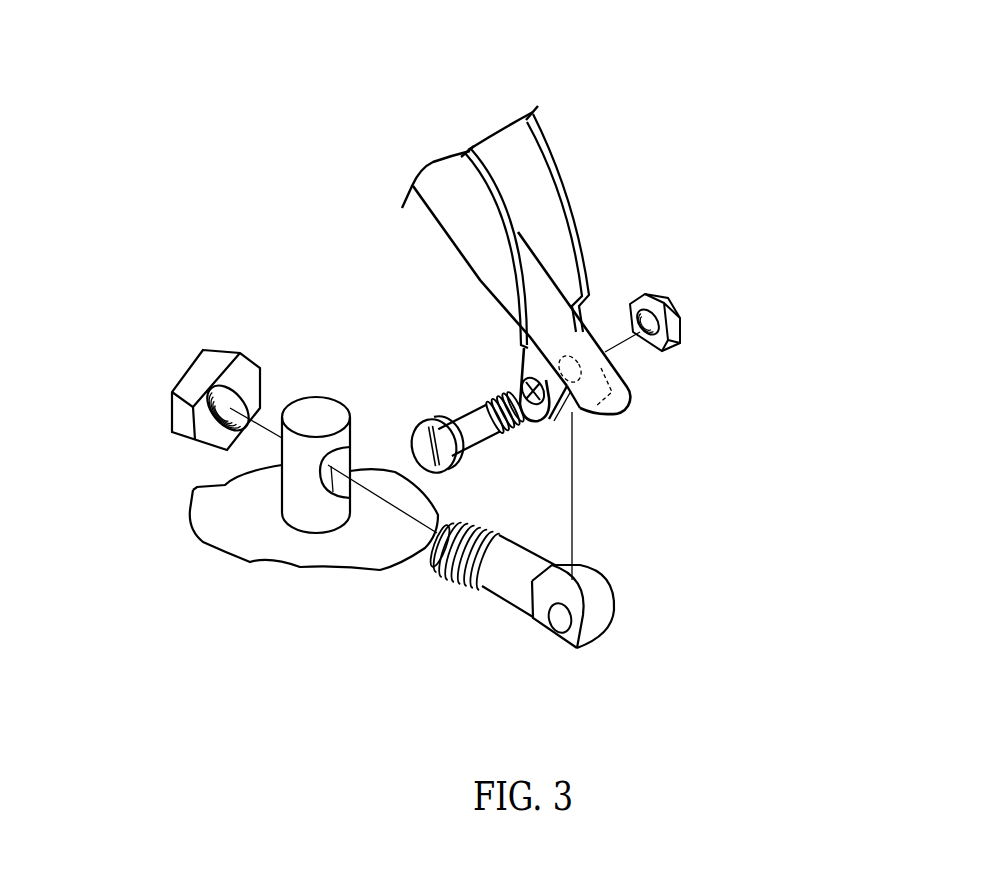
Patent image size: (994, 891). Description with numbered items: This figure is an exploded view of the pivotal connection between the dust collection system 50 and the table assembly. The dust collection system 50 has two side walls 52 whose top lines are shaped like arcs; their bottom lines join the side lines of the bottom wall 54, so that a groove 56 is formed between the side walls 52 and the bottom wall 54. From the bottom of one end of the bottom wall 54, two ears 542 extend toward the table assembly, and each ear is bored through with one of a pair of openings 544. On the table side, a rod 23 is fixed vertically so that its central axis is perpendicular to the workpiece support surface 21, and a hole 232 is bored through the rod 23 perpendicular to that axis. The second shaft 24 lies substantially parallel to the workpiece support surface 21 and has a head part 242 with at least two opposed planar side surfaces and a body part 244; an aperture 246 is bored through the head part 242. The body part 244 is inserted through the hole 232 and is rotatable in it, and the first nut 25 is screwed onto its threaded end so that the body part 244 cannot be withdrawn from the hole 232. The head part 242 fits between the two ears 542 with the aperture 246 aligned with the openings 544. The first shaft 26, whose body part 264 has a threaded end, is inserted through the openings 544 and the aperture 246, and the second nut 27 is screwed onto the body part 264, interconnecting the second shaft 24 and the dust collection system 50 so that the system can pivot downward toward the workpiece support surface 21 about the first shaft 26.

The dust collection system 50 is at (553, 263).
The side walls 52 is at (560, 198).
The bottom wall 54 is at (617, 395).
The ears 542 is at (632, 408).
The openings 544 is at (576, 362).
The groove 56 is at (540, 310).
The first shaft 26 is at (461, 413).
The body part 264 is at (509, 318).
The second nut 27 is at (670, 309).
The first nut 25 is at (192, 374).
The workpiece support surface 21 is at (222, 512).
The rod 23 is at (288, 518).
The hole 232 is at (332, 480).
The second shaft 24 is at (533, 618).
The head part 242 is at (605, 619).
The body part 244 is at (463, 578).
The aperture 246 is at (557, 630).